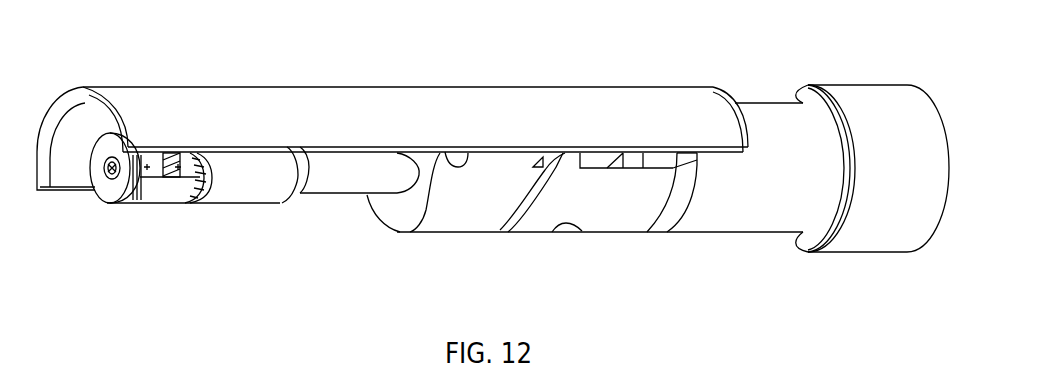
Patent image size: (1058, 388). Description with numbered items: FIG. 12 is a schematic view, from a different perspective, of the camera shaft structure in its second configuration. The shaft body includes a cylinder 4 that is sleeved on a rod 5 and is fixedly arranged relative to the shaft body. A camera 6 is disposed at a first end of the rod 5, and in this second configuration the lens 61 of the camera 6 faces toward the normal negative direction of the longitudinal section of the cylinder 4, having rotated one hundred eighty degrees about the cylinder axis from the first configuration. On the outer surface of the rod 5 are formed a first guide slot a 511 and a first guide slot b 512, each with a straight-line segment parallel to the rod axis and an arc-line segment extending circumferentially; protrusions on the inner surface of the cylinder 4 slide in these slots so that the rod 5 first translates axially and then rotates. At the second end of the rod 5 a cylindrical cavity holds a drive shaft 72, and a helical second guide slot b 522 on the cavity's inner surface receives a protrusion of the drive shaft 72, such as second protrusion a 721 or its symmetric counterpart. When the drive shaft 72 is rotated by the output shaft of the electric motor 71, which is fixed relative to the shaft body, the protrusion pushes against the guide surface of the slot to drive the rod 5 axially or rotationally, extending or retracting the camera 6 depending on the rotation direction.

The cylinder 4 is at (177, 103).
The rod 5 is at (740, 183).
The camera 6 is at (897, 193).
The lens 61 is at (855, 83).
The electric motor 71 is at (243, 170).
The drive shaft 72 is at (328, 190).
The second protrusion a 721 is at (457, 157).
The first guide slot a 511 is at (578, 228).
The first guide slot b 512 is at (677, 200).
The second guide slot b 522 is at (522, 203).